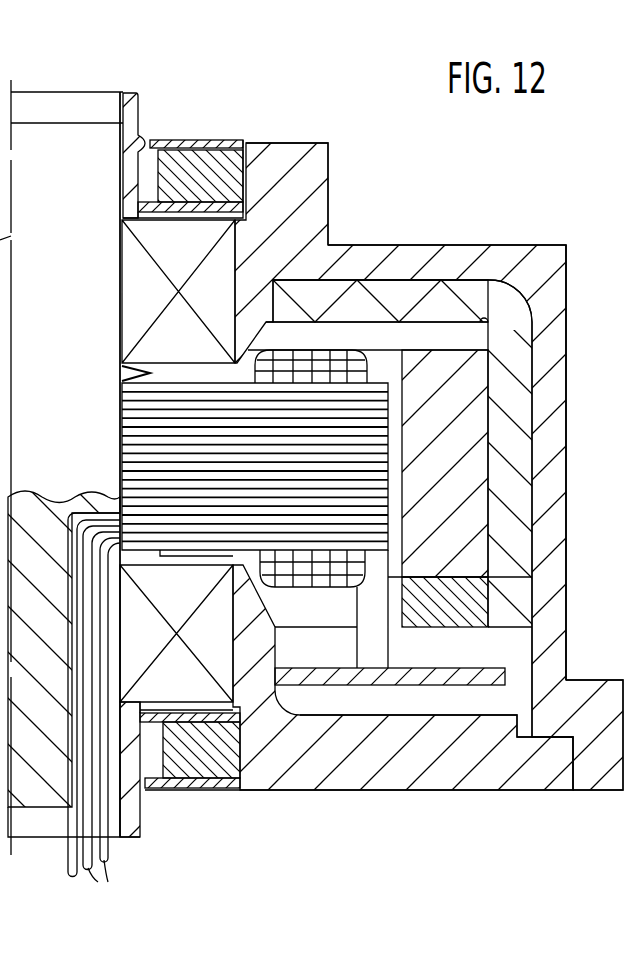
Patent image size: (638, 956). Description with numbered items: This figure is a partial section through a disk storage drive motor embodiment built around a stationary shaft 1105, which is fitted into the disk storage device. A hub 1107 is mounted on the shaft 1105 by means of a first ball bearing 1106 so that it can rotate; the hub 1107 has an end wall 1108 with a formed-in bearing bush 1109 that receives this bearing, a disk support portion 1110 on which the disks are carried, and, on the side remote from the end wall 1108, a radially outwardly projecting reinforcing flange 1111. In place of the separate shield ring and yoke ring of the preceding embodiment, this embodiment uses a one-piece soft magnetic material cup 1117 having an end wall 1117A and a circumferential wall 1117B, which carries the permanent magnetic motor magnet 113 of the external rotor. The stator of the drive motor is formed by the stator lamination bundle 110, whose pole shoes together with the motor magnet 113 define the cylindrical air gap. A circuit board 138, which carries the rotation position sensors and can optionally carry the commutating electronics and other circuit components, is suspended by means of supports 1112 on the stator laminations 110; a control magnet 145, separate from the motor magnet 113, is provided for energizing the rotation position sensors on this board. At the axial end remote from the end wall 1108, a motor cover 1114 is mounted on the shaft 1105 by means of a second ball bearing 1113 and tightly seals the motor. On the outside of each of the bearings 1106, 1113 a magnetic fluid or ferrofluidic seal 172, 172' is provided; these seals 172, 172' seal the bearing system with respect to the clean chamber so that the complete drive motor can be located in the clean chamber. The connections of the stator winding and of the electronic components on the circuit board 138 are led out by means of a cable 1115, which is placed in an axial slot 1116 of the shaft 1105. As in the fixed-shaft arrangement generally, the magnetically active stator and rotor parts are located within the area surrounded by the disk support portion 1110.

The shaft 1105 is at (88, 107).
The magnetic fluid seal 172 is at (183, 148).
The bearing bush 1109 is at (277, 157).
The first ball bearing 1106 is at (232, 278).
The hub 1107 is at (333, 233).
The end wall 1117A is at (415, 307).
The end wall 1108 is at (498, 255).
The soft magnetic material cup 1117 is at (522, 340).
The motor magnet 113 is at (473, 380).
The stator lamination bundle 110 is at (385, 433).
The disk support portion 1110 is at (550, 482).
The circumferential wall 1117B is at (517, 572).
The control magnet 145 is at (460, 610).
The reinforcing flange 1111 is at (595, 773).
The motor cover 1114 is at (517, 773).
The circuit board 138 is at (432, 680).
The supports 1112 is at (363, 647).
The second ball bearing 1113 is at (218, 662).
The magnetic fluid seal 172' is at (201, 795).
The axial slot 1116 is at (110, 792).
The cable 1115 is at (72, 876).